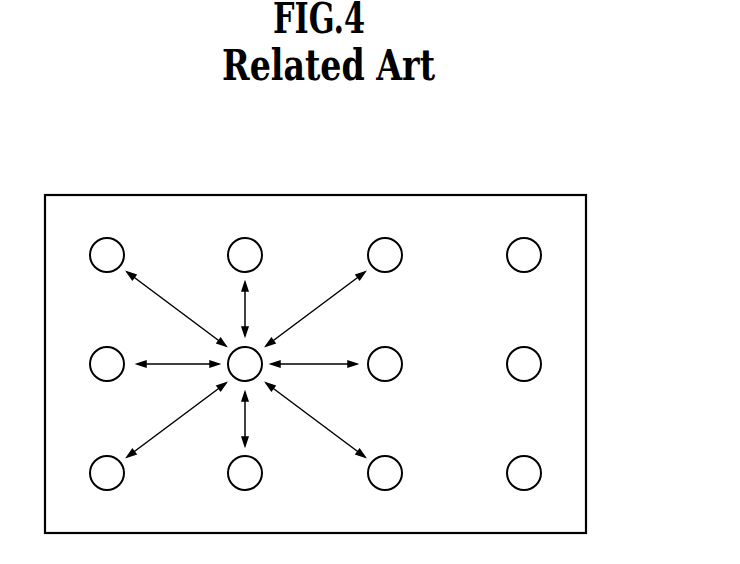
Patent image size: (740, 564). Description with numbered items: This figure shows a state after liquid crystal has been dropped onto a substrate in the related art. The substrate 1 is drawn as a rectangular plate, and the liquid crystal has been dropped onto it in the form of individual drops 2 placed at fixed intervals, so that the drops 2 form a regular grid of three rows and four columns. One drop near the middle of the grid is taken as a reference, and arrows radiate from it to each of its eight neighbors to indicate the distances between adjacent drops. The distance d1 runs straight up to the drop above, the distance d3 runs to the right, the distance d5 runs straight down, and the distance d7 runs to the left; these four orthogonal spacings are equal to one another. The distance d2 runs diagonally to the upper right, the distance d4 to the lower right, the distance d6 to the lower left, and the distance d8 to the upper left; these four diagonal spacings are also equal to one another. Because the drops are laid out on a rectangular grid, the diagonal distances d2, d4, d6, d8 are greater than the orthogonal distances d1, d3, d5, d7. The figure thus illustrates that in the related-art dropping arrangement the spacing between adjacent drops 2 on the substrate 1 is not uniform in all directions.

The substrate / panel 1 is at (587, 357).
The hole / pixel element 2 is at (243, 250).
The distance between adjacent liquid crystal drops d1 is at (260, 309).
The distance between adjacent liquid crystal drops d2 is at (315, 309).
The distance between adjacent liquid crystal drops d3 is at (314, 376).
The distance between adjacent liquid crystal drops d4 is at (315, 420).
The distance between adjacent liquid crystal drops d5 is at (259, 419).
The distance between adjacent liquid crystal drops d6 is at (176, 420).
The distance between adjacent liquid crystal drops d7 is at (178, 377).
The distance between adjacent liquid crystal drops d8 is at (176, 309).